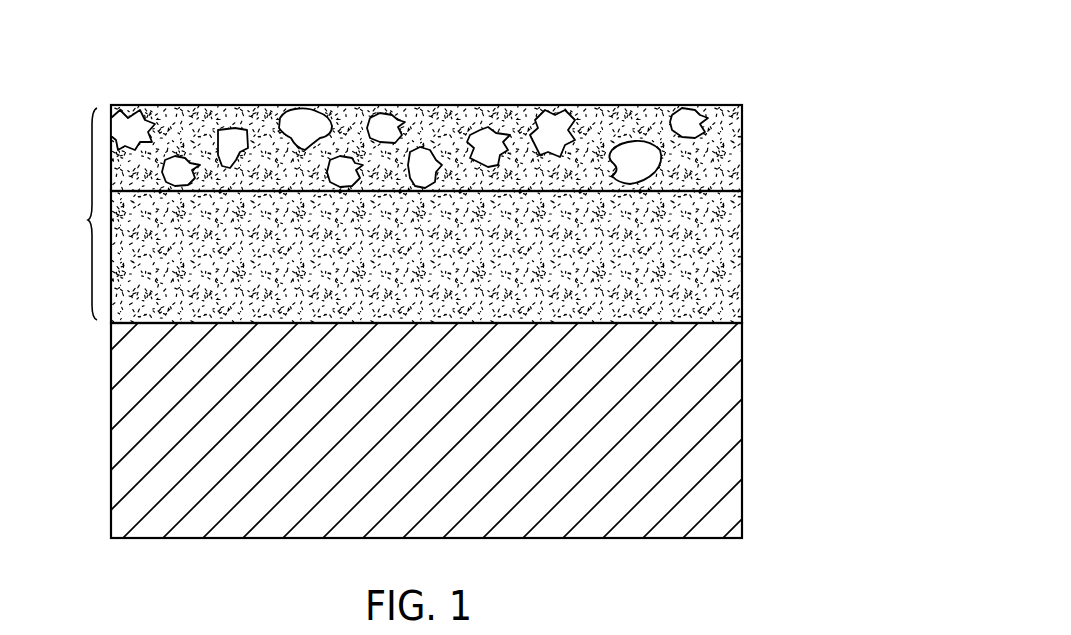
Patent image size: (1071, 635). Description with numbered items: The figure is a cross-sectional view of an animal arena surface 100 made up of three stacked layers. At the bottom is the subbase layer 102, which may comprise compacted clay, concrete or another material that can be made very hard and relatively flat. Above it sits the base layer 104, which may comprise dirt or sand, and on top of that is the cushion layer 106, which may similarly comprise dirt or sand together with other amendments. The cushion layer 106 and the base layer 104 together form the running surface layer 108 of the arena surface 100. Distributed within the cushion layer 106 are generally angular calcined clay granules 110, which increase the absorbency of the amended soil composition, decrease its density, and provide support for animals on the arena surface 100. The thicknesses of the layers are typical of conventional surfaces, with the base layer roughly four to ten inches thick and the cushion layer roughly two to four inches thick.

The animal arena surface 100 is at (755, 121).
The subbase layer 102 is at (742, 398).
The base layer 104 is at (742, 259).
The cushion layer 106 is at (742, 162).
The running surface layer 108 is at (66, 214).
The calcined clay granules 110 is at (233, 147).